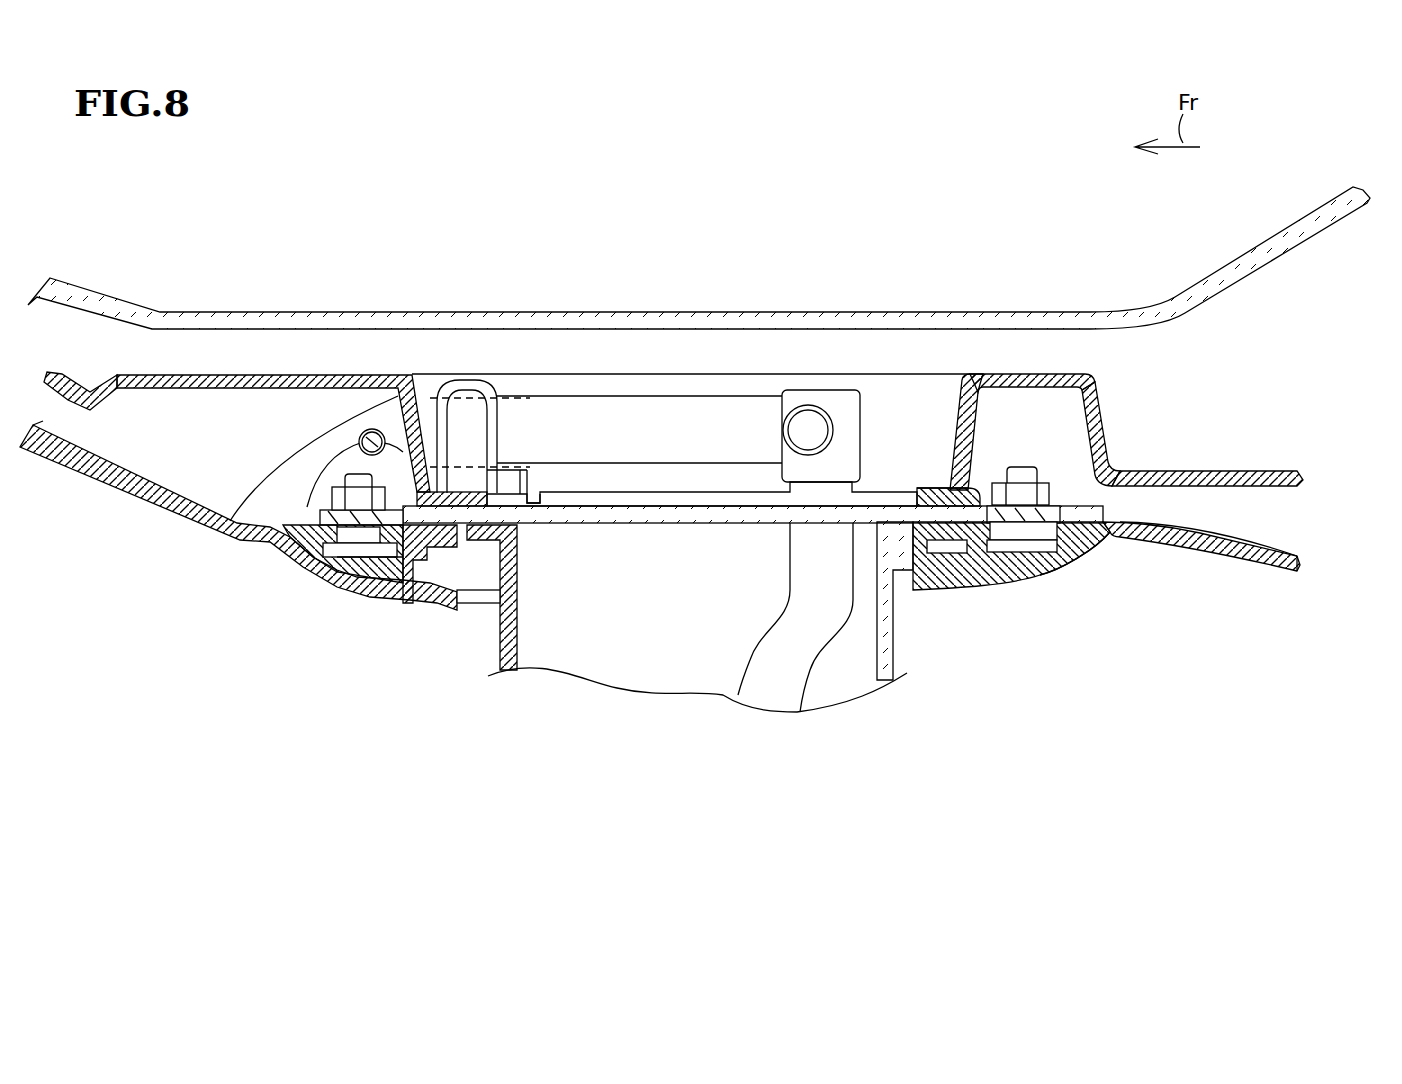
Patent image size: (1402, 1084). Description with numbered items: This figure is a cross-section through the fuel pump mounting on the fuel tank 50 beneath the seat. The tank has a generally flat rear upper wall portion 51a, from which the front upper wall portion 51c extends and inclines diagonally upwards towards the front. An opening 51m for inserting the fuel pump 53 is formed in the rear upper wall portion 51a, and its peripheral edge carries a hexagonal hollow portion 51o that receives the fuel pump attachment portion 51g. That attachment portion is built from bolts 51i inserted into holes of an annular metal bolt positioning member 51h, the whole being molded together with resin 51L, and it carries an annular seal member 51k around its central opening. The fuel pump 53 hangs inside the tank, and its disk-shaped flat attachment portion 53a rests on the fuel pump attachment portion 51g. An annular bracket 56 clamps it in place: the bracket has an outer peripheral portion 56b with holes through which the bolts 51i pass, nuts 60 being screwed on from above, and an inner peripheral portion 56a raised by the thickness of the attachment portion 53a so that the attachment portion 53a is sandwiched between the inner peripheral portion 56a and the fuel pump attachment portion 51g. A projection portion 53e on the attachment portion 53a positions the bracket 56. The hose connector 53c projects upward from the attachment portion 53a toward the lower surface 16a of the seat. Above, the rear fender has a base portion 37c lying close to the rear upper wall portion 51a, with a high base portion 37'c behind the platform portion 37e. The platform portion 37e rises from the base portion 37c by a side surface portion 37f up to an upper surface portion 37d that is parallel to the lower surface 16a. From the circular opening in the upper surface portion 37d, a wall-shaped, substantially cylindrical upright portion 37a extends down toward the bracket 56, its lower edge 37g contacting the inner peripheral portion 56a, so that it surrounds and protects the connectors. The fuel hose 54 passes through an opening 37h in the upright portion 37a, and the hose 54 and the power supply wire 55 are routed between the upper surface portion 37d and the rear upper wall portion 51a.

The lower surface 16a is at (150, 316).
The upright portion 37a is at (423, 480).
The upper surface portion 37d is at (1000, 372).
The platform portion 37e is at (1030, 360).
The base portion 37c is at (1214, 453).
The high base portion 37'c is at (1201, 363).
The side surface portion 37f is at (1100, 555).
The lower edge 37g is at (970, 575).
The opening 37h is at (507, 377).
The fuel tank 50 is at (1263, 527).
The rear upper wall portion 51a is at (1157, 525).
The front upper wall portion 51c is at (60, 443).
The fuel pump attachment portion 51g is at (290, 510).
The bolt positioning member 51h is at (428, 593).
The bolts 51i is at (333, 593).
The seal member 51k is at (520, 540).
The resin 51L is at (300, 560).
The opening 51m is at (482, 614).
The hollow portion 51o is at (395, 495).
The fuel pump 53 is at (700, 485).
The attachment portion 53a is at (641, 493).
The hose connector 53c is at (815, 392).
The projection portion 53e is at (540, 497).
The fuel hose 54 is at (600, 392).
The wire 55 is at (333, 505).
The bracket 56 is at (926, 476).
The inner peripheral portion 56a is at (950, 490).
The outer peripheral portion 56b is at (1023, 470).
The nuts 60 is at (343, 547).